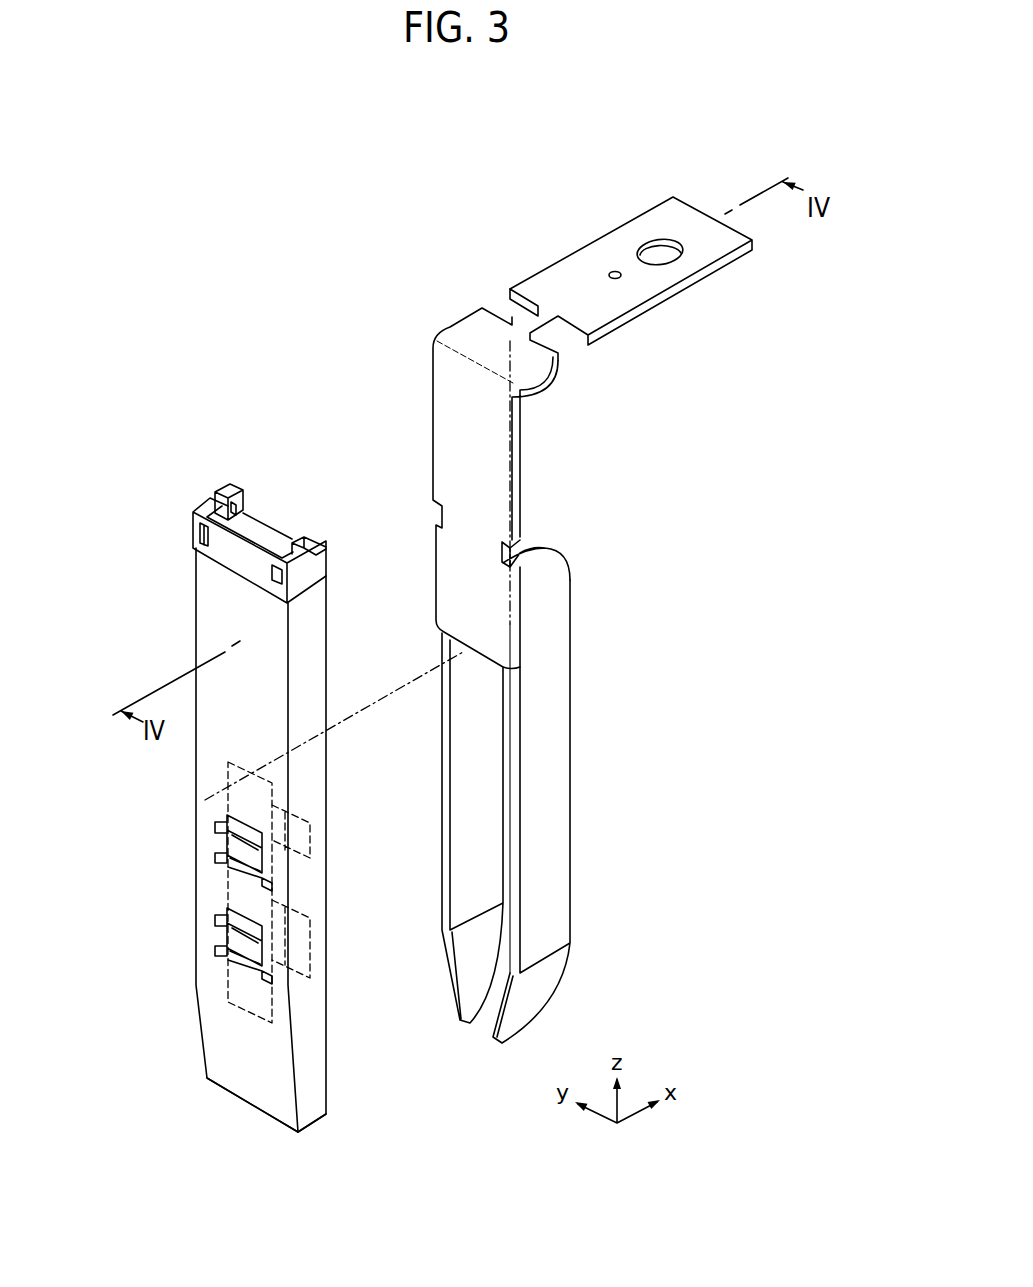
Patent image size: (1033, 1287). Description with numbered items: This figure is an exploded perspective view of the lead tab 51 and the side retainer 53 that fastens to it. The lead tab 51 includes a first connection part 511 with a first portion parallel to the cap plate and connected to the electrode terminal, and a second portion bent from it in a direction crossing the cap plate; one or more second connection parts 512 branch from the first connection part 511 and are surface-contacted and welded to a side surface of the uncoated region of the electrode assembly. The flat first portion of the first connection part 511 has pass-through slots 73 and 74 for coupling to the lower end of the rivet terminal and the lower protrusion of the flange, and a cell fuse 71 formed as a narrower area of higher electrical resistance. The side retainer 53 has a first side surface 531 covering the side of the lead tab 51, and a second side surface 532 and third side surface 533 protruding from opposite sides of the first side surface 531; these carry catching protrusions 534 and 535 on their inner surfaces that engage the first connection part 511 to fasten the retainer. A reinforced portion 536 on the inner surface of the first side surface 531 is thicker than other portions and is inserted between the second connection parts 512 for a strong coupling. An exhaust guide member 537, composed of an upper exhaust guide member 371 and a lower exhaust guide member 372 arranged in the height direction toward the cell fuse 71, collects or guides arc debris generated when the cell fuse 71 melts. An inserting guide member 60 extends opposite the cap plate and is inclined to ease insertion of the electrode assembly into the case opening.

The lead tab 51 is at (601, 252).
The cell fuse 71 is at (500, 303).
The pass-through slot 73 is at (664, 240).
The pass-through slot 74 is at (615, 271).
The first connection part 511 is at (430, 366).
The second connection part 512 is at (552, 747).
The side retainer 53 is at (238, 772).
The first side surface 531 is at (225, 604).
The second side surface 532 is at (218, 490).
The third side surface 533 is at (313, 650).
The catching protrusion 534 is at (238, 504).
The catching protrusion 535 is at (298, 541).
The reinforced portion 536 is at (228, 798).
The exhaust guide member 537 is at (168, 905).
The upper exhaust guide member 371 is at (230, 879).
The lower exhaust guide member 372 is at (230, 943).
The inserting guide member 60 is at (248, 1087).